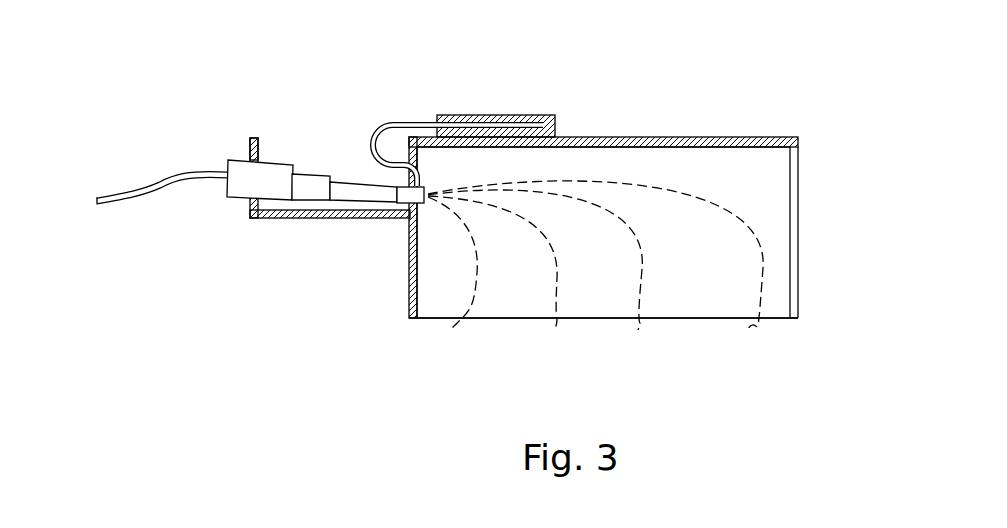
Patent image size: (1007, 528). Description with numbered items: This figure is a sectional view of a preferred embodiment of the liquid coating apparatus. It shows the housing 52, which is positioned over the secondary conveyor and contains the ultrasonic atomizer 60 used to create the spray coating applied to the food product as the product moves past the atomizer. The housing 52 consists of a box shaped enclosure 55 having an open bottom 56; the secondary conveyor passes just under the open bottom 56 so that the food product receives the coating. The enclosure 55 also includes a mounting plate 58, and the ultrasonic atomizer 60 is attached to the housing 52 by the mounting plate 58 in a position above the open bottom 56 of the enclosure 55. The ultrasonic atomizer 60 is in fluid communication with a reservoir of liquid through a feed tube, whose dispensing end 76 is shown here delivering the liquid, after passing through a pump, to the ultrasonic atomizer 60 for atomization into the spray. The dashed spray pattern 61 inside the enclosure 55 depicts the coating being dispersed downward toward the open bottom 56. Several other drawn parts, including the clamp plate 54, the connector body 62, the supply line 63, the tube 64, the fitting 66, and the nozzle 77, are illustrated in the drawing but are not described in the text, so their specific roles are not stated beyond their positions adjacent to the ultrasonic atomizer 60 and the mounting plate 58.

The housing 52 is at (808, 215).
The clamp plate 54 is at (557, 122).
The box shaped enclosure 55 is at (765, 140).
The open bottom 56 is at (690, 320).
The mounting plate 58 is at (303, 226).
The ultrasonic atomizer 60 is at (222, 200).
The spray pattern 61 is at (550, 295).
The mounting post 62 is at (240, 158).
The supply line 63 is at (130, 186).
The feed tube 64 is at (392, 203).
The fitting 66 is at (347, 168).
The dispensing end 76 is at (368, 125).
The nozzle 77 is at (428, 181).